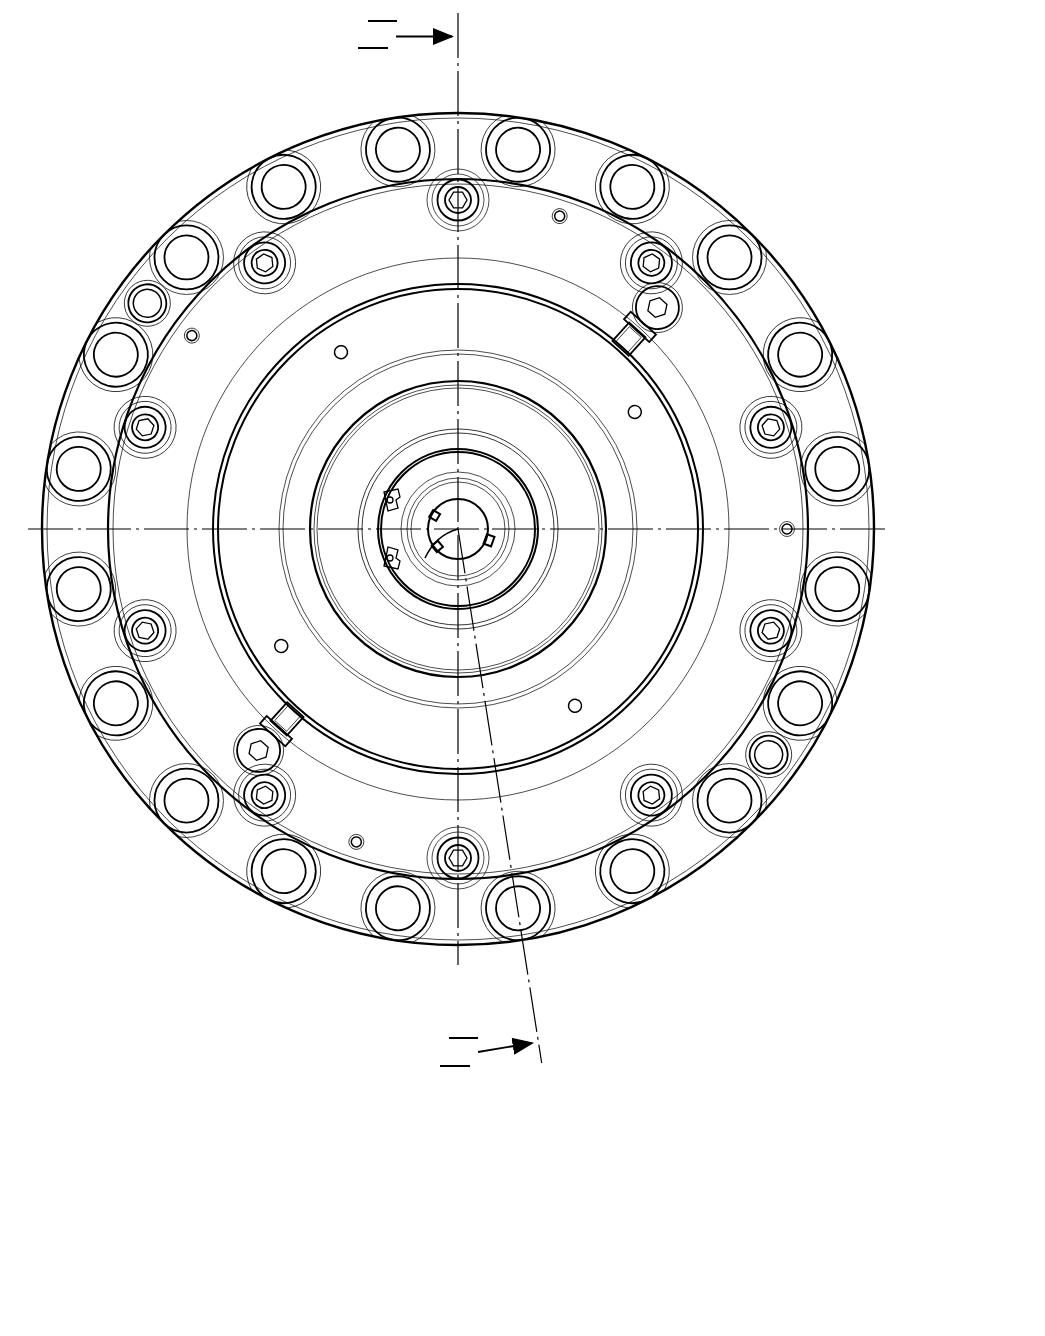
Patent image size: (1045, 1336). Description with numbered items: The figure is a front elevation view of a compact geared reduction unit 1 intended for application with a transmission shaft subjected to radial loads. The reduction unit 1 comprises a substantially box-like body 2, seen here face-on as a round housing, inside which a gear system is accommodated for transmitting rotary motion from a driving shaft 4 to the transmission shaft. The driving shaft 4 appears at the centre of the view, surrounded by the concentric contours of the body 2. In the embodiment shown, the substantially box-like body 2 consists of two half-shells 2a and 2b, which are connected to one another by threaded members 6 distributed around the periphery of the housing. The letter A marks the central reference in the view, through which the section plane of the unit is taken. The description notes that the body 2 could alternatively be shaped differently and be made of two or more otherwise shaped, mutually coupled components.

The compact geared reduction unit 1 is at (738, 106).
The substantially box-like body 2 is at (490, 528).
The half-shell 2a is at (772, 493).
The half-shell 2b is at (870, 632).
The driving shaft 4 is at (484, 500).
The threaded members 6 is at (262, 260).
The axis of rotation A is at (420, 570).